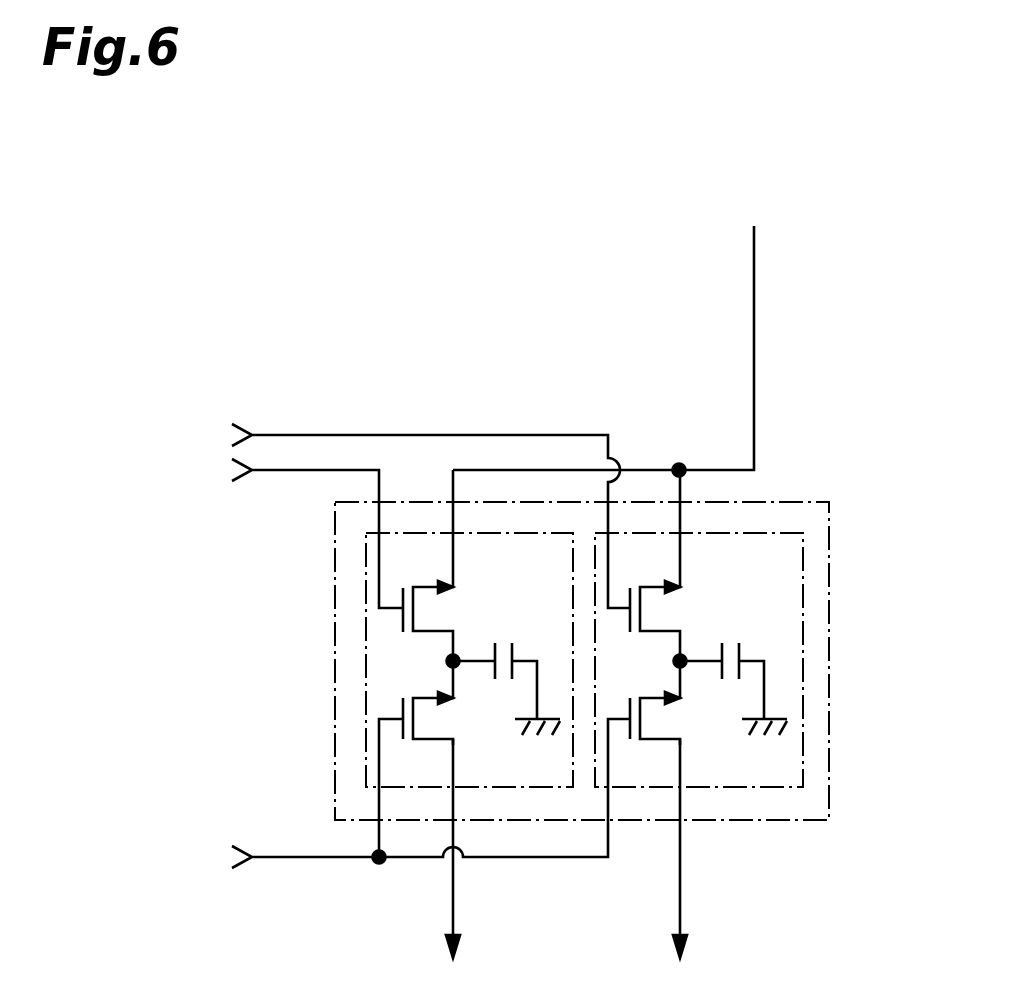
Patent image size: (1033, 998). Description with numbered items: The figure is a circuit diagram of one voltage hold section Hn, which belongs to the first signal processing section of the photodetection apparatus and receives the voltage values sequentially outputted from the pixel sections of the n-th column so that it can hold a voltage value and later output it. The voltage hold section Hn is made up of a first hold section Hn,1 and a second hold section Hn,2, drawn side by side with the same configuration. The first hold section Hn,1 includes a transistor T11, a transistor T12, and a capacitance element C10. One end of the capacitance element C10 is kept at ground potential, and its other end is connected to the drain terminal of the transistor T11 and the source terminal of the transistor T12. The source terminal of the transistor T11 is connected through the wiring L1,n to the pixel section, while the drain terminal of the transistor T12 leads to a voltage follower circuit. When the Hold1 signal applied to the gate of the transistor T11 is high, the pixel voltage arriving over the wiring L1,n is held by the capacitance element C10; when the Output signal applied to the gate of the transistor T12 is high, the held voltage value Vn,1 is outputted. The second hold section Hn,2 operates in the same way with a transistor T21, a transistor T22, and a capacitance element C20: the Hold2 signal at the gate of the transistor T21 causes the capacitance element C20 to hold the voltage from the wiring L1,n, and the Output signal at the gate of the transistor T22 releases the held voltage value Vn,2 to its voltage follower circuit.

The wiring L1,n is at (756, 264).
The voltage hold section Hn is at (814, 502).
The first hold section Hn,1 is at (366, 632).
The second hold section Hn,2 is at (803, 612).
The transistor T11 is at (458, 565).
The transistor T12 is at (458, 714).
The transistor T21 is at (685, 565).
The transistor T22 is at (685, 714).
The capacitance element C10 is at (506, 670).
The capacitance element C20 is at (733, 670).
The voltage value Vn,1 is at (484, 854).
The voltage value Vn,2 is at (711, 854).
The Hold1 signal Hold1 is at (265, 530).
The Hold2 signal Hold2 is at (378, 511).
The Output signal Output is at (372, 796).